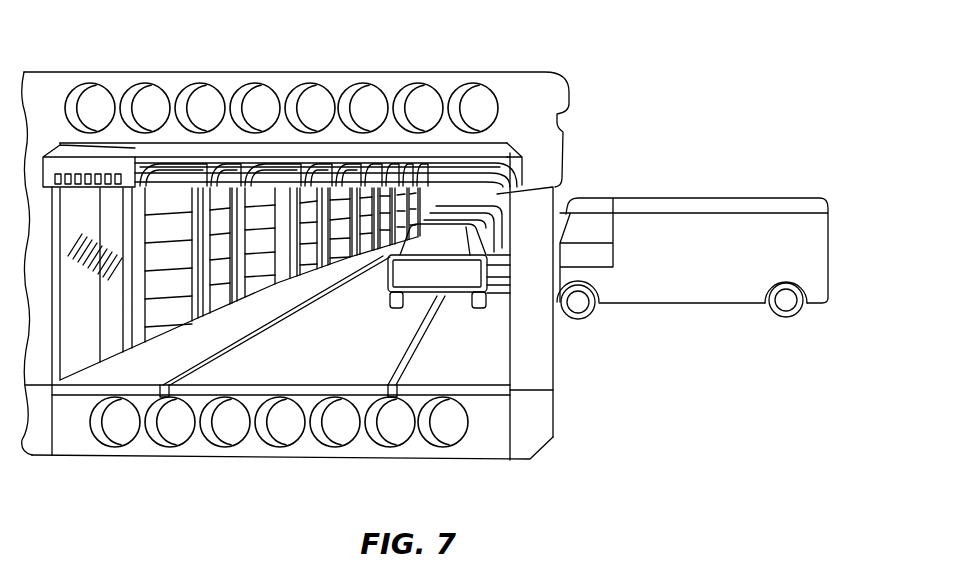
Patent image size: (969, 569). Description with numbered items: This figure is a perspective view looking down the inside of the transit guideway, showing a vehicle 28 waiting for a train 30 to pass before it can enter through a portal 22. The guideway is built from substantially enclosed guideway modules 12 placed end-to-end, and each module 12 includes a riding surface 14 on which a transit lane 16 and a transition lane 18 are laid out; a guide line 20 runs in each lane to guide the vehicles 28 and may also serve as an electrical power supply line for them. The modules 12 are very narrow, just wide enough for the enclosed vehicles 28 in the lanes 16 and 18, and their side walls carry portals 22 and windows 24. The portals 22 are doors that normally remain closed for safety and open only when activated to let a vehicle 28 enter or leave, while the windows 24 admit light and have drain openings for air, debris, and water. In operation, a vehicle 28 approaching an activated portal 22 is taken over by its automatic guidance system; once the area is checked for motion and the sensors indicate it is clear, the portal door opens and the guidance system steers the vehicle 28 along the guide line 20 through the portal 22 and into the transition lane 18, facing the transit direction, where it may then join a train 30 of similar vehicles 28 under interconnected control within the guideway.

The guideway module 12 is at (531, 92).
The riding surface 14 is at (315, 447).
The transit lane 16 is at (393, 337).
The transition lane 18 is at (240, 335).
The guide line 20 is at (423, 347).
The portal 22 is at (160, 297).
The window 24 is at (88, 313).
The vehicle 28 is at (690, 230).
The train 30 is at (560, 185).